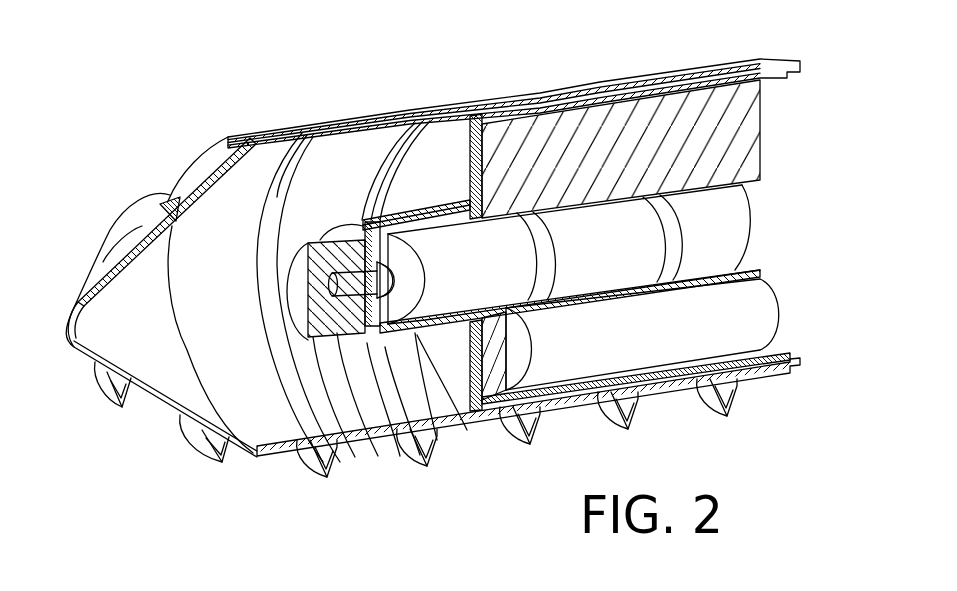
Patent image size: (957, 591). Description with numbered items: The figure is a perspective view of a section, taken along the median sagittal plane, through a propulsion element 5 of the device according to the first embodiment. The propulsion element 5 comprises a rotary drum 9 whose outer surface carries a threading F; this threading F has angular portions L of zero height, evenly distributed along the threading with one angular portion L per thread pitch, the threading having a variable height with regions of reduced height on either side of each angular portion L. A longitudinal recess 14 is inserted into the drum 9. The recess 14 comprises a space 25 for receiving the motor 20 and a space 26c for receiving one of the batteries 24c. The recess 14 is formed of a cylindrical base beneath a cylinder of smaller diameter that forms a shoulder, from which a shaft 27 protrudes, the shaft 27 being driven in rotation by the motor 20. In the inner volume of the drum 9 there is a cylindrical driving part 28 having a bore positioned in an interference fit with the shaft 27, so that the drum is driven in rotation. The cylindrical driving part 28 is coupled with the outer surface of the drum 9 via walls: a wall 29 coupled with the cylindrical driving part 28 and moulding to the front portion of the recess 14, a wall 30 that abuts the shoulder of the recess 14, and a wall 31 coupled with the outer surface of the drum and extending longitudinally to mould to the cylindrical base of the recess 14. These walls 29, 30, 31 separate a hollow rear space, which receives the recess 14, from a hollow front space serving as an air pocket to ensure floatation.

The propulsion element 5 is at (257, 81).
The rotary drum 9 is at (277, 440).
The threading F is at (143, 212).
The angular portions L is at (363, 122).
The longitudinal recess 14 is at (713, 127).
The motor 20 is at (630, 230).
The space for receiving the motor 25 is at (705, 249).
The battery 24c is at (757, 322).
The space for receiving a battery 26c is at (520, 357).
The wall 31 is at (660, 387).
The cylindrical driving part 28 is at (353, 287).
The shaft 27 is at (345, 335).
The wall 29 is at (463, 357).
The wall 30 is at (455, 350).